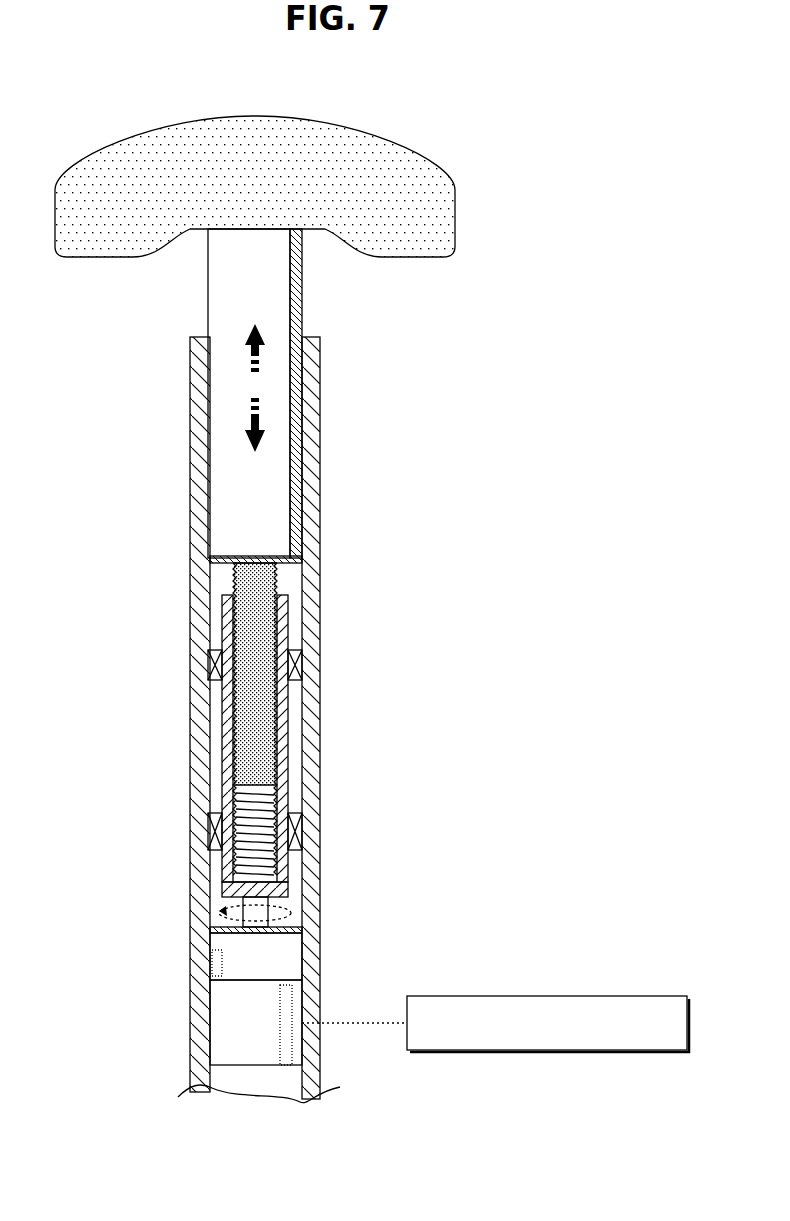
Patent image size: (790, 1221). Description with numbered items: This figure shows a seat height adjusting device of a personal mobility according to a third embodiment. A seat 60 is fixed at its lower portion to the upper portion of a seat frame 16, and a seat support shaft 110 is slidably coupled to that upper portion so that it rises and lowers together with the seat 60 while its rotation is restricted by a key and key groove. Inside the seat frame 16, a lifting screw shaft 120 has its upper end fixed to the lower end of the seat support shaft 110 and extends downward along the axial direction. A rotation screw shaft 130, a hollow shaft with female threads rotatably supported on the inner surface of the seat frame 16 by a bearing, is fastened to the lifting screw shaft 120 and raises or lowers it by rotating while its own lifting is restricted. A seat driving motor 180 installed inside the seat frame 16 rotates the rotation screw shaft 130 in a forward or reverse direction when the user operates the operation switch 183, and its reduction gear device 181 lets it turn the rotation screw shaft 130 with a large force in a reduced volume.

The seat 60 is at (118, 162).
The seat frame 16 is at (202, 860).
The seat support shaft 110 is at (228, 402).
The lifting screw shaft 120 is at (250, 622).
The rotation screw shaft 130 is at (228, 748).
The seat driving motor 180 is at (225, 1022).
The reduction gear device 181 is at (292, 953).
The operation switch 183 is at (478, 995).